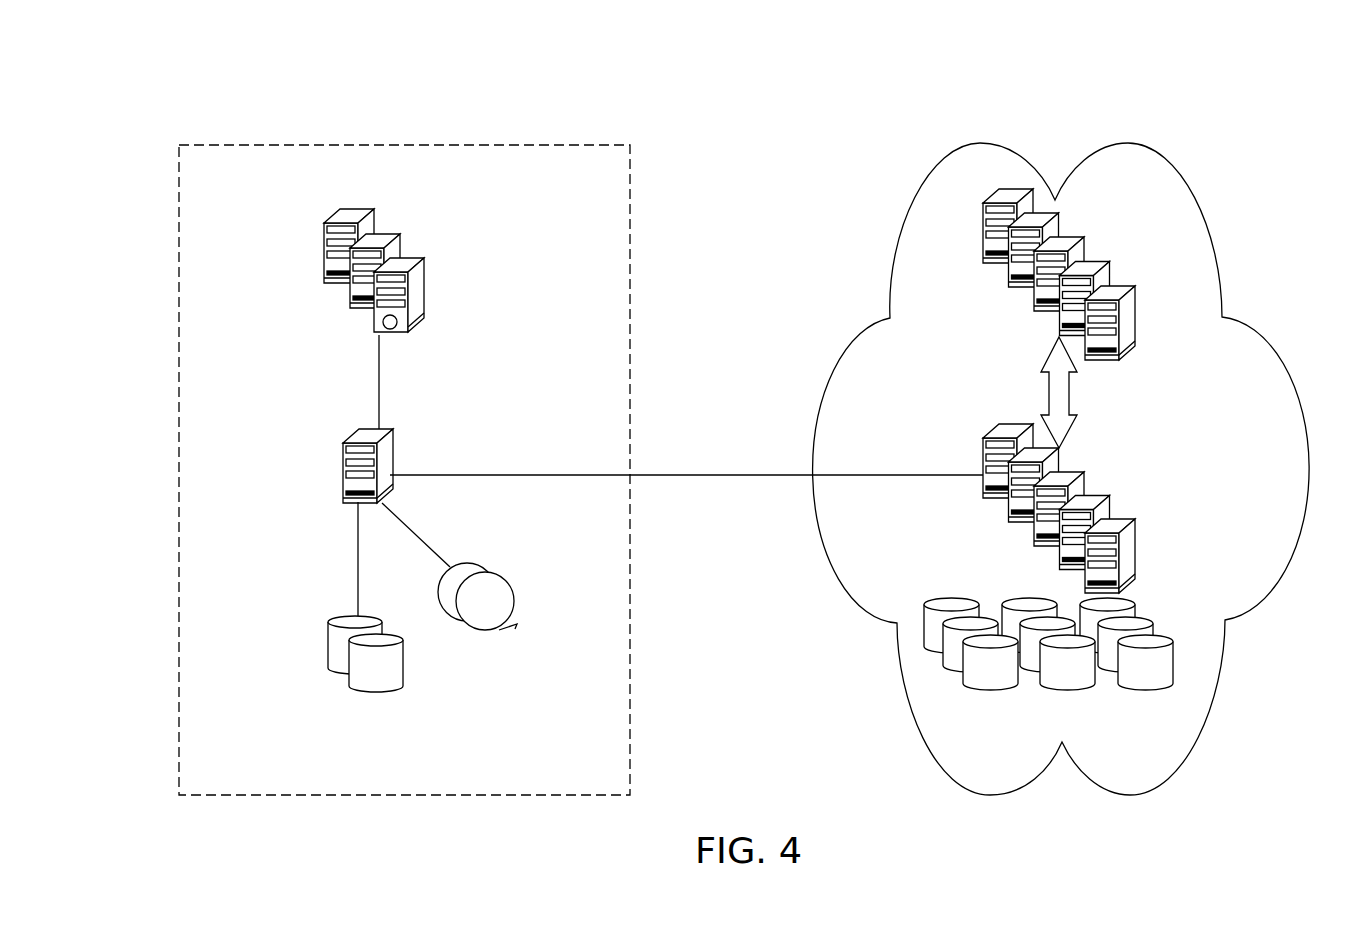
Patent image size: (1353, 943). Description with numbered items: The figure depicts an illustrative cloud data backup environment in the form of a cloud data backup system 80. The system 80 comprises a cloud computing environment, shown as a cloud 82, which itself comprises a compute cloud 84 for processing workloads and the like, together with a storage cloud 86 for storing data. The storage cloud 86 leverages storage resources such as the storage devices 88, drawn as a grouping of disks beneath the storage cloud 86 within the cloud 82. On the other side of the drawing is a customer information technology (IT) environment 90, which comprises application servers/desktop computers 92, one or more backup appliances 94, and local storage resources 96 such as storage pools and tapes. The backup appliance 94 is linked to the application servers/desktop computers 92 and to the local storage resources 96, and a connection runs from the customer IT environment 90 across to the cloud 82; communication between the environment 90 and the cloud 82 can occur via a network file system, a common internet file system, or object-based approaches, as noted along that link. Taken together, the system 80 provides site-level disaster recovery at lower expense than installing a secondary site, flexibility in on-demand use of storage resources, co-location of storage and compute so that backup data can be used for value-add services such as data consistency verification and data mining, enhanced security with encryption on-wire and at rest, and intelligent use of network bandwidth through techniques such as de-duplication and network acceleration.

The cloud data backup system 80 is at (787, 126).
The cloud computing environment 82 is at (1125, 146).
The compute cloud 84 is at (983, 252).
The storage cloud 86 is at (983, 444).
The storage devices 88 is at (1032, 687).
The customer information technology (IT) environment 90 is at (477, 146).
The application servers/desktop computers 92 is at (324, 264).
The backup appliance 94 is at (343, 481).
The local storage resources 96 is at (438, 675).